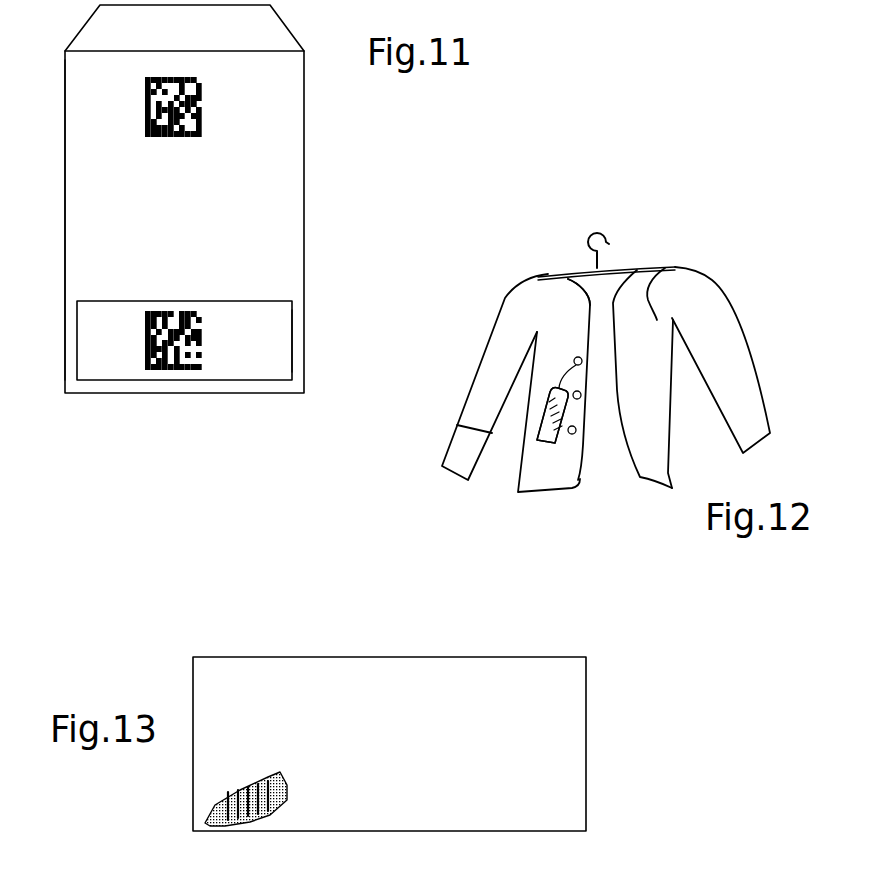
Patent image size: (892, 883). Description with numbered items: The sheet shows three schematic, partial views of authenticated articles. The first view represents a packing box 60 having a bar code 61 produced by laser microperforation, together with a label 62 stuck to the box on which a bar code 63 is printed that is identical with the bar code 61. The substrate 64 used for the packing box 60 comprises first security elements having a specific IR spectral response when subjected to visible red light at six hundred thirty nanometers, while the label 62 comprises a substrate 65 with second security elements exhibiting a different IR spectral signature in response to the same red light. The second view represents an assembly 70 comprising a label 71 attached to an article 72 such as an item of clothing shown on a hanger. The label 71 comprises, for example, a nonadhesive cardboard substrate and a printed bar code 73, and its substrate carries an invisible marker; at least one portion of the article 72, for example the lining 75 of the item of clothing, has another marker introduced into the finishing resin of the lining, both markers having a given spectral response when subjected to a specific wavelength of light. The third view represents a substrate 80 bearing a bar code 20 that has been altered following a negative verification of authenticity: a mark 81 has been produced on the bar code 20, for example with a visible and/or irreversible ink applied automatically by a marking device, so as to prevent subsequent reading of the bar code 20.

In FIG. 11, the packing box 60 is at (296, 214).
In FIG. 11, the bar code 61 is at (202, 128).
In FIG. 11, the label 62 is at (275, 360).
In FIG. 11, the bar code 63 is at (173, 370).
In FIG. 11, the substrate 64 is at (73, 173).
In FIG. 11, the substrate 65 is at (108, 363).
In FIG. 12, the assembly 70 is at (744, 308).
In FIG. 12, the label 71 is at (540, 444).
In FIG. 12, the article 72 is at (675, 269).
In FIG. 12, the printed bar code 73 is at (540, 408).
In FIG. 12, the lining 75 is at (608, 443).
In FIG. 13, the substrate 80 is at (568, 718).
In FIG. 13, the mark 81 is at (280, 773).
In FIG. 13, the bar code 20 is at (280, 810).